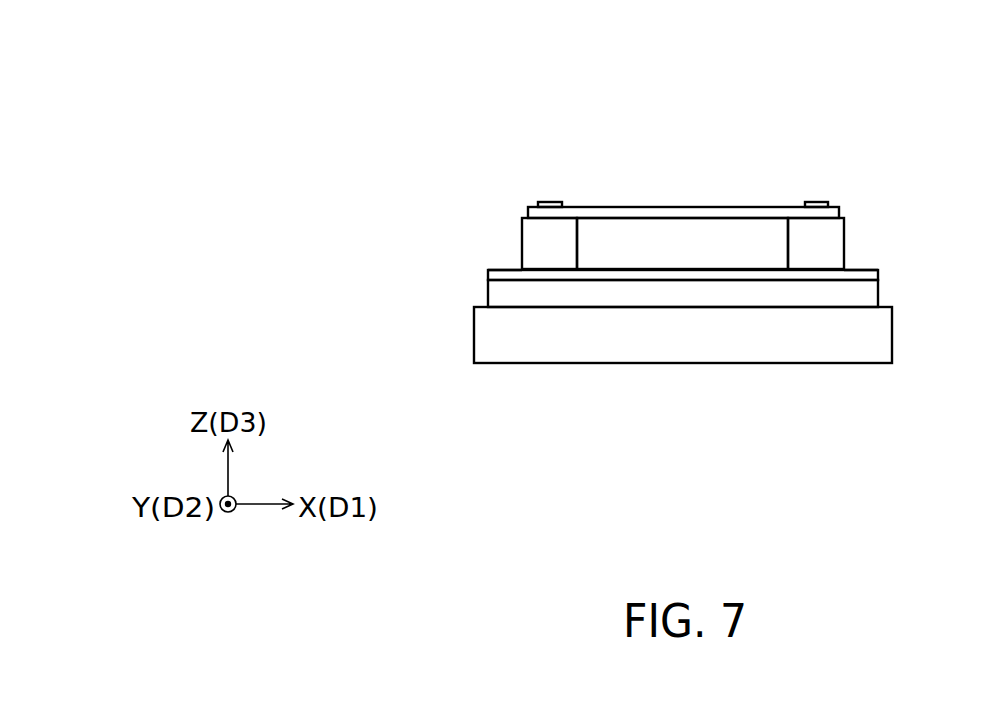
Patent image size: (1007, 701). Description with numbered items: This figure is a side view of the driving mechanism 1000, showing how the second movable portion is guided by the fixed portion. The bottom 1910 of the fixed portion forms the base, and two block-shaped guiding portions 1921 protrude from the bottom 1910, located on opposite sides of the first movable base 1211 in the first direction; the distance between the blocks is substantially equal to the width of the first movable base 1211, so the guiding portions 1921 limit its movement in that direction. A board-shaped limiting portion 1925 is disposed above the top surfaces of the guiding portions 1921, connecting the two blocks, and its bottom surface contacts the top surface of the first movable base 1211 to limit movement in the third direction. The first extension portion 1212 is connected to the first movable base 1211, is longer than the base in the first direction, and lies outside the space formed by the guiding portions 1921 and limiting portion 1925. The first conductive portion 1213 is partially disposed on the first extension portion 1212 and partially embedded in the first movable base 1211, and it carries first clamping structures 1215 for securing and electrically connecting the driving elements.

The driving mechanism 1000 is at (309, 58).
The bottom 1910 is at (777, 355).
The first extension portion 1212 is at (593, 300).
The first conductive portion 1213 is at (687, 275).
The first clamping structure 1215 is at (497, 270).
The guiding portion 1921 is at (532, 235).
The first movable base 1211 is at (730, 235).
The limiting portion 1925 is at (638, 207).